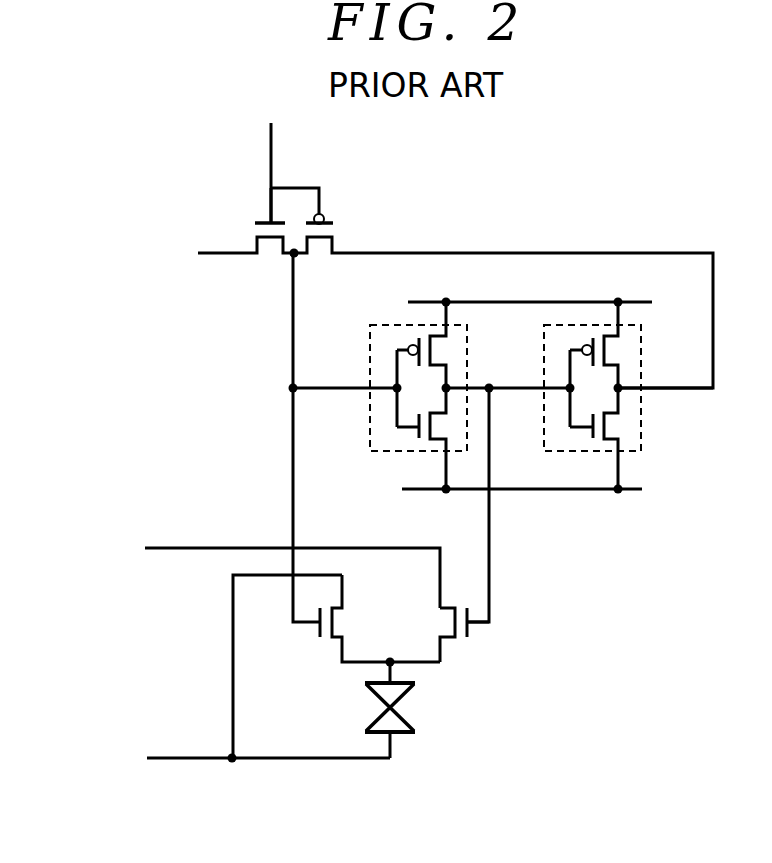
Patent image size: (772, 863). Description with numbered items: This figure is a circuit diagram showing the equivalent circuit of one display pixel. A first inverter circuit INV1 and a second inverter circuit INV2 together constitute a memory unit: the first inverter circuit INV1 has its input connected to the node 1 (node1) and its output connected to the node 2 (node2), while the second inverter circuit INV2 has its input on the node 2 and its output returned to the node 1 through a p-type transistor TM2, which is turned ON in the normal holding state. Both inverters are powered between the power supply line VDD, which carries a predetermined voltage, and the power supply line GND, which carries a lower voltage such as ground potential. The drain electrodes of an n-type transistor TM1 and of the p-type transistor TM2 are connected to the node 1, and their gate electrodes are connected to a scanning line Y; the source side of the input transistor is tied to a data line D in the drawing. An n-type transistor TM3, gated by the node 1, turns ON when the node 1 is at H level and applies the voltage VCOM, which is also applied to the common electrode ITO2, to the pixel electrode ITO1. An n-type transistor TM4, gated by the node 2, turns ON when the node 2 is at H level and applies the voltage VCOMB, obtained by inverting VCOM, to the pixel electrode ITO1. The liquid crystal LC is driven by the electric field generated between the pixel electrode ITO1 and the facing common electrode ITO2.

The n-type transistor TM1 is at (268, 224).
The p-type transistor TM2 is at (332, 225).
The first inverter circuit INV1 is at (463, 325).
The second inverter circuit INV2 is at (640, 325).
The node 1 node1 is at (293, 387).
The node 2 node2 is at (492, 392).
The n-type transistor TM3 is at (341, 625).
The n-type transistor TM4 is at (470, 627).
The pixel electrode ITO1 is at (366, 690).
The common electrode ITO2 is at (400, 735).
The liquid crystal LC is at (393, 707).
The scanning line Y is at (269, 160).
The data line D is at (444, 312).
The power supply line VDD is at (501, 302).
The power supply line GND is at (491, 489).
The second video voltage VCOMB is at (236, 570).
The first video voltage VCOM is at (223, 757).